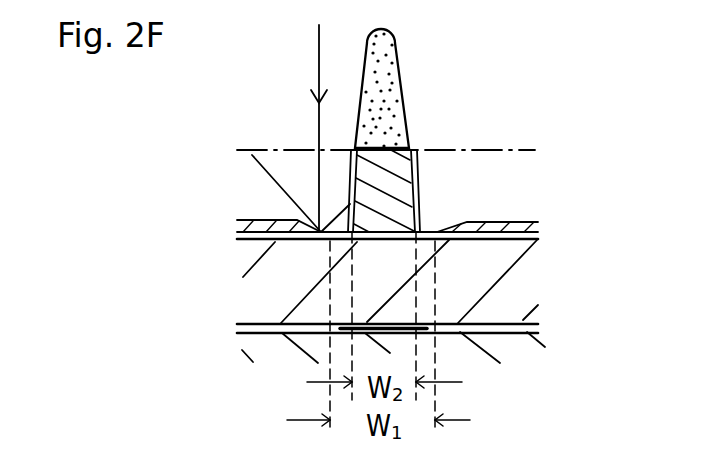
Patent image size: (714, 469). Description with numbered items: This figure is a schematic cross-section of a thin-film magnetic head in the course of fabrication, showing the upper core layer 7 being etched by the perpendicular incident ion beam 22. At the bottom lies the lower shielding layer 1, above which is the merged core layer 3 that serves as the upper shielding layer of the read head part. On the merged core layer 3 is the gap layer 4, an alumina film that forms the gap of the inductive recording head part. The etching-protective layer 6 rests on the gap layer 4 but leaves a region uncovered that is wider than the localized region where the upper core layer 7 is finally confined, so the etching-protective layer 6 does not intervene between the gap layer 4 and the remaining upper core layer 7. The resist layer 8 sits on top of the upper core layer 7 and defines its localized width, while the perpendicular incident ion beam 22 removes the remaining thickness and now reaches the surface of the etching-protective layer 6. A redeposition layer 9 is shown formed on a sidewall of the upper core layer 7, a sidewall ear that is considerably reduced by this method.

The lower shielding layer 1 is at (527, 355).
The merged core layer 3 is at (520, 287).
The gap layer 4 is at (535, 236).
The etching-protective layer 6 is at (523, 222).
The upper core layer 7 is at (395, 168).
The resist layer 8 is at (393, 103).
The redeposition layer 9 is at (420, 190).
The perpendicular incident ion beam 22 is at (318, 62).